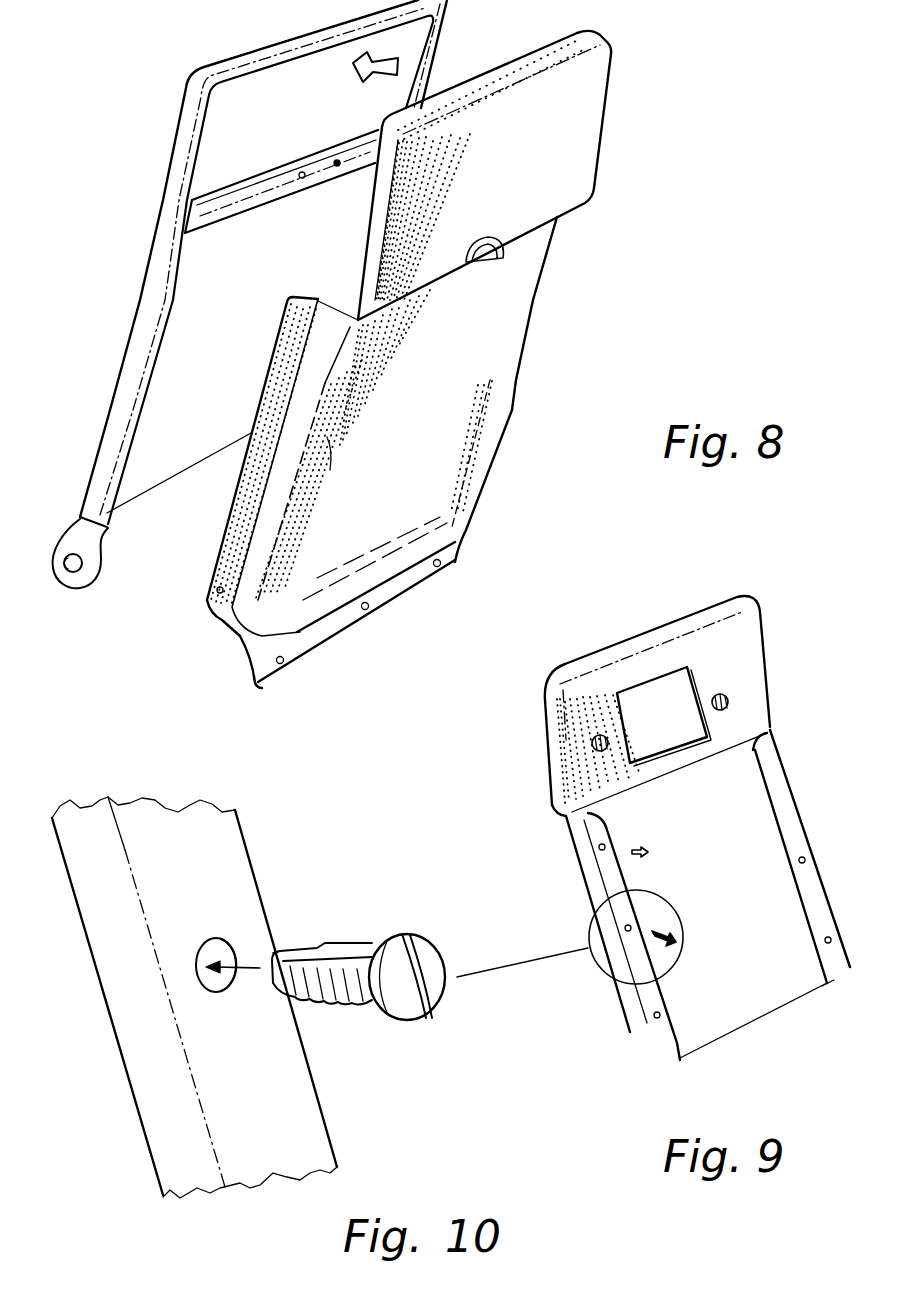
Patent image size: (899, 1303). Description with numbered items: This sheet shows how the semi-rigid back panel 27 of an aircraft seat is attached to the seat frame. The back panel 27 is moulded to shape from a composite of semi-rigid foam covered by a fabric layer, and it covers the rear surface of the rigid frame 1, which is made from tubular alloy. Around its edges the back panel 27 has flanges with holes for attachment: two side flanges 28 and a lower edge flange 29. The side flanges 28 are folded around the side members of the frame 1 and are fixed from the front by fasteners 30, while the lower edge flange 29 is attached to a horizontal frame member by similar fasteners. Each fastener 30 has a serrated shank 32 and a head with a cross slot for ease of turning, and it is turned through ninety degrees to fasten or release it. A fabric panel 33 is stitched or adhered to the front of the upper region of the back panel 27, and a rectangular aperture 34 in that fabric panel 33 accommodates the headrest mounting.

In FIG. 8, the rigid frame 1 is at (152, 298).
In FIG. 8, the semi-rigid back panel 27 is at (516, 378).
In FIG. 8, the side flanges 28 is at (237, 530).
In FIG. 9, the side flanges 28 is at (612, 877).
In FIG. 10, the side flanges 28 is at (287, 1130).
In FIG. 8, the lower edge flange 29 is at (310, 637).
In FIG. 9, the fastener 30 is at (662, 936).
In FIG. 10, the fastener 30 is at (361, 980).
In FIG. 10, the serrated shank 32 is at (360, 948).
In FIG. 9, the fabric panel 33 is at (728, 636).
In FIG. 9, the rectangular aperture 34 is at (678, 746).